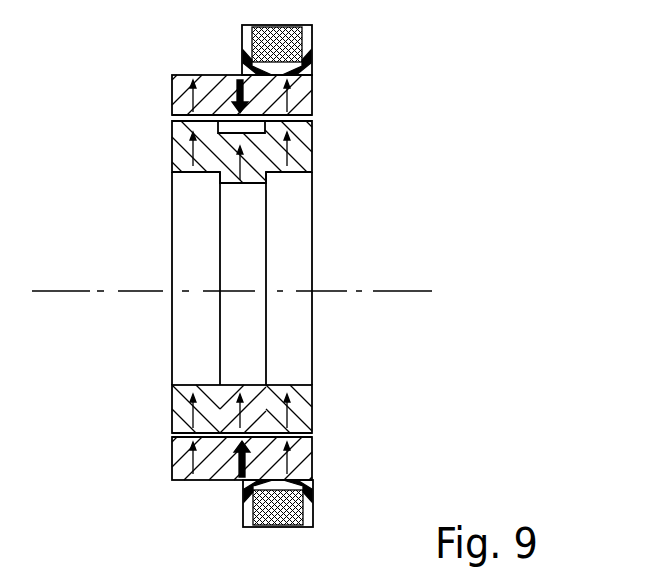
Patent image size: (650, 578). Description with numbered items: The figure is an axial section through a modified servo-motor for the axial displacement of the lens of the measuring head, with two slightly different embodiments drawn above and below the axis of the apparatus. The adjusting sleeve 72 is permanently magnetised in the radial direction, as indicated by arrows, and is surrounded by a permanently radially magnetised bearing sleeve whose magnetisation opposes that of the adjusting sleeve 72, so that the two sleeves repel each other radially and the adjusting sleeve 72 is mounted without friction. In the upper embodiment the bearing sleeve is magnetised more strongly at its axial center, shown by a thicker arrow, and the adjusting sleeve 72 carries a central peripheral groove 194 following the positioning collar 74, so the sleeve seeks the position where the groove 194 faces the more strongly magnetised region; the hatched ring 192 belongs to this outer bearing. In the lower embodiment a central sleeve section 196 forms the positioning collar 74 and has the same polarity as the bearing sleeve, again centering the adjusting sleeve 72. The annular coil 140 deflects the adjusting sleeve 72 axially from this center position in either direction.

The annular coil 140 is at (305, 47).
The outer ring 192 is at (307, 90).
The peripheral groove 194 is at (228, 116).
The adjusting sleeve 72 is at (307, 147).
The positioning collar 74 is at (253, 173).
The central sleeve section 196 is at (298, 343).